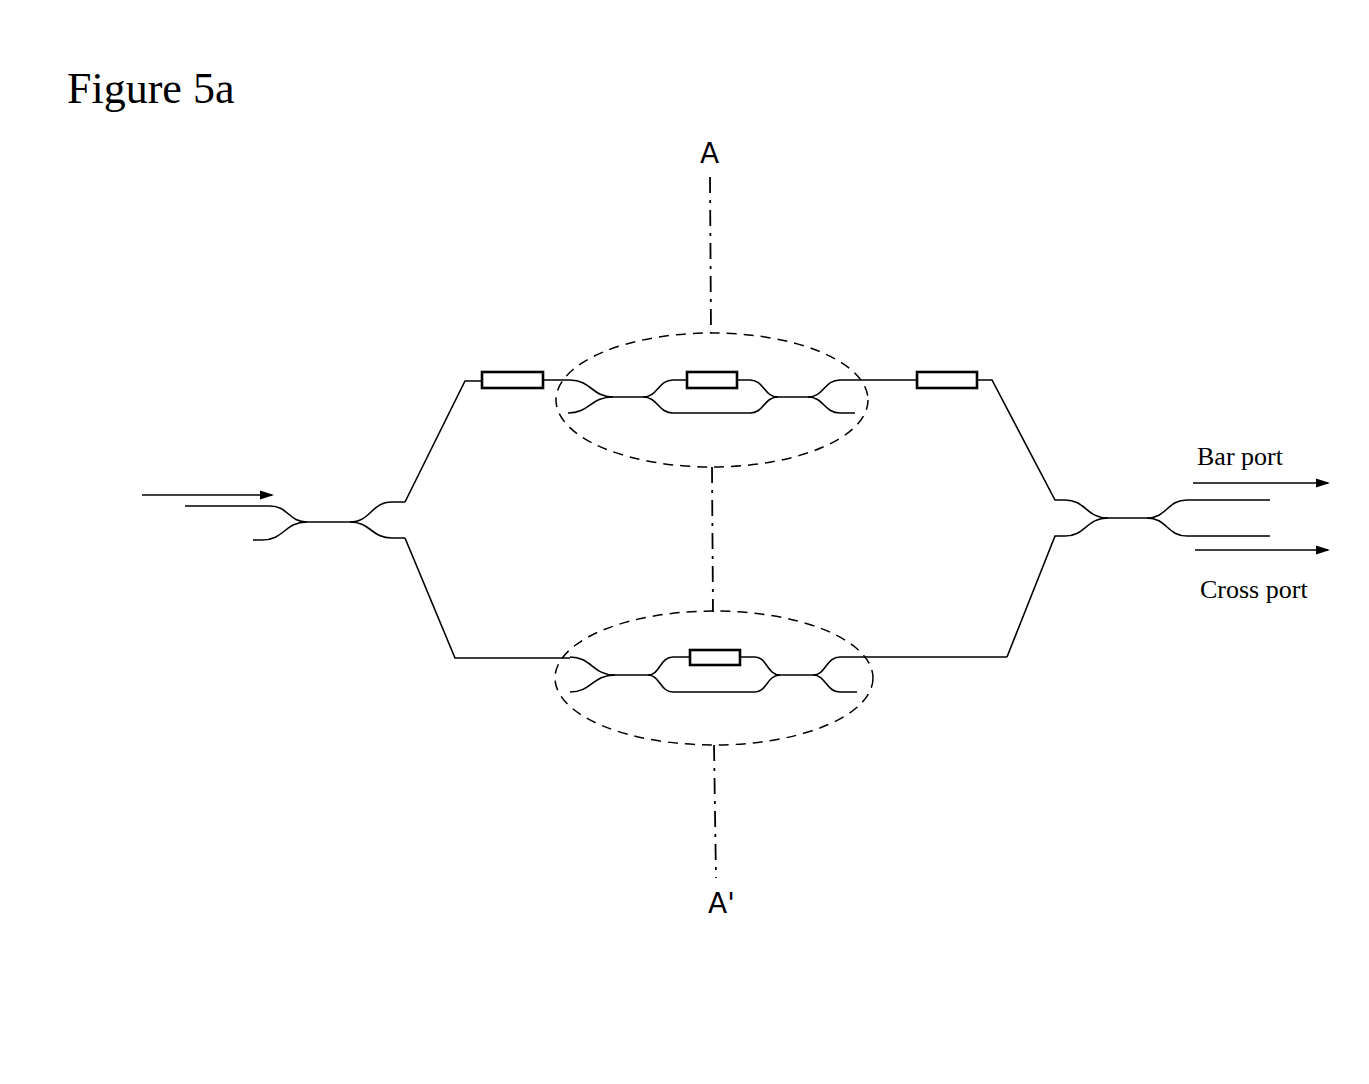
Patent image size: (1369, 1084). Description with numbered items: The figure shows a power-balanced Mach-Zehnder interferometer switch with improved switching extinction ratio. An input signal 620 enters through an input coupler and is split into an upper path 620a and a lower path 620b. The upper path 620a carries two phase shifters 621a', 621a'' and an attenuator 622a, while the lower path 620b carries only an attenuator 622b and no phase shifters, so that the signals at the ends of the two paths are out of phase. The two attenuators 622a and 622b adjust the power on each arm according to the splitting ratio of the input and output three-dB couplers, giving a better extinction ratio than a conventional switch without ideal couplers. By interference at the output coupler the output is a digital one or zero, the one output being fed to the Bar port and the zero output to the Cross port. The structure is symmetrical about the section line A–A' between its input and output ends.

The signal 620 is at (273, 498).
The upper path 620a is at (487, 441).
The lower path 620b is at (487, 598).
The phase shifter 621a' is at (515, 345).
The phase shifter 621a'' is at (944, 343).
The attenuator 622a is at (782, 333).
The attenuator 622b is at (825, 740).